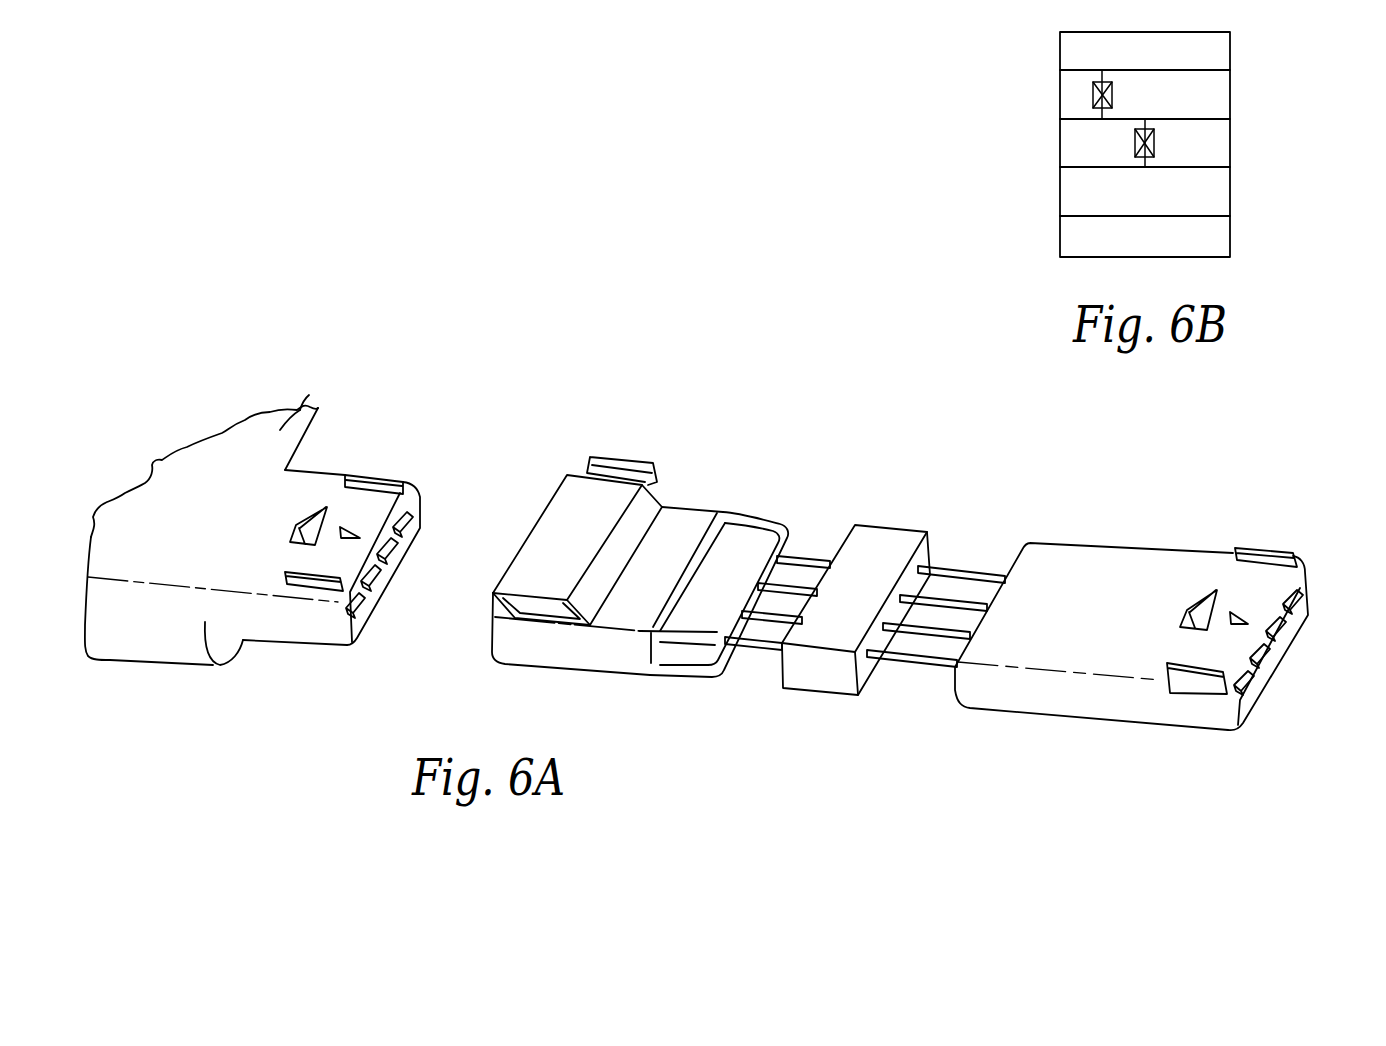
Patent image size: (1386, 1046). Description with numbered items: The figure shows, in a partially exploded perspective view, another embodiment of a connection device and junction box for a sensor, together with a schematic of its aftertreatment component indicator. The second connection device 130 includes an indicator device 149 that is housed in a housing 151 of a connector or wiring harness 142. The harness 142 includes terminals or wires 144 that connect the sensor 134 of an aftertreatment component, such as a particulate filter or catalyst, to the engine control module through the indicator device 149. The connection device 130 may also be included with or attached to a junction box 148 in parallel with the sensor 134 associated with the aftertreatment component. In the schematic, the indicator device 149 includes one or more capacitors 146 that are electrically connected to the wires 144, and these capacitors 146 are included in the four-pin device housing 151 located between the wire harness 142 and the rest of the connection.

In FIG. 6A, the second connection device 130 is at (1163, 780).
In FIG. 6A, the sensor 134 is at (140, 663).
In FIG. 6A, the wiring harness 142 is at (828, 388).
In FIG. 6A, the wires 144 is at (820, 562).
In FIG. 6B, the capacitors 146 is at (1093, 93).
In FIG. 6A, the junction box 148 is at (303, 405).
In FIG. 6B, the indicator device 149 is at (1240, 48).
In FIG. 6A, the housing 151 is at (808, 693).